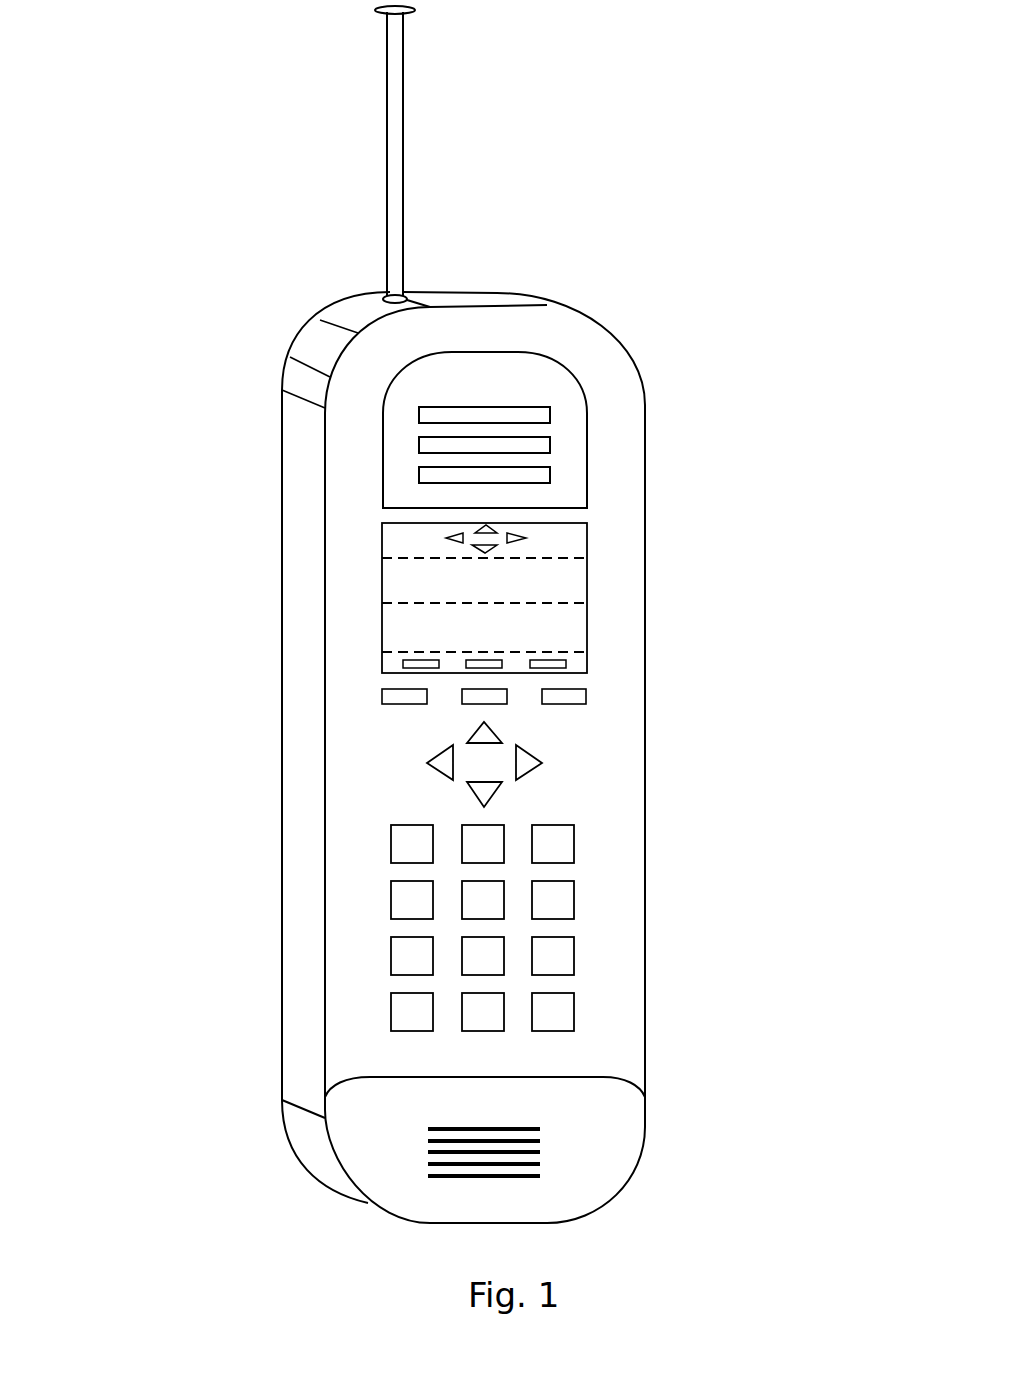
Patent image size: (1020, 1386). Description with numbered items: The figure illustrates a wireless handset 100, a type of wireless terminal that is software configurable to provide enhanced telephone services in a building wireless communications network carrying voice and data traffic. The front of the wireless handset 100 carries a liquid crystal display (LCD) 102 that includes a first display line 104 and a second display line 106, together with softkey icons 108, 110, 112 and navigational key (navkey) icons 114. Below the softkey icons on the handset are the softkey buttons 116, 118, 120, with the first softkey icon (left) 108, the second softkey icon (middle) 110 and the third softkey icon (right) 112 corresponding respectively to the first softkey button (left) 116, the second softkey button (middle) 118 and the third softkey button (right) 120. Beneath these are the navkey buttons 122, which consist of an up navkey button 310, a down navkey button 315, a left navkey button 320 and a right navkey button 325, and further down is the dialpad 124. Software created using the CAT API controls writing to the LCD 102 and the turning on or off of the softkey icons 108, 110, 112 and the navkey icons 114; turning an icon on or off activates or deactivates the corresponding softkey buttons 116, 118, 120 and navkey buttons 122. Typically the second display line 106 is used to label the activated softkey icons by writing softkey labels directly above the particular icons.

The wireless handset 100 is at (537, 188).
The liquid crystal display 102 is at (350, 547).
The first display line 104 is at (582, 576).
The second display line 106 is at (580, 632).
The first softkey icon 108 is at (402, 665).
The second softkey icon 110 is at (467, 664).
The third softkey icon 112 is at (567, 663).
The navigational key icons 114 is at (418, 464).
The first softkey button 116 is at (397, 703).
The second softkey button 118 is at (467, 703).
The third softkey button 120 is at (587, 692).
The navkey buttons 122 is at (522, 731).
The dialpad 124 is at (586, 866).
The up navkey button 310 is at (488, 527).
The down navkey button 315 is at (473, 547).
The left navkey button 320 is at (453, 538).
The right navkey button 325 is at (520, 540).